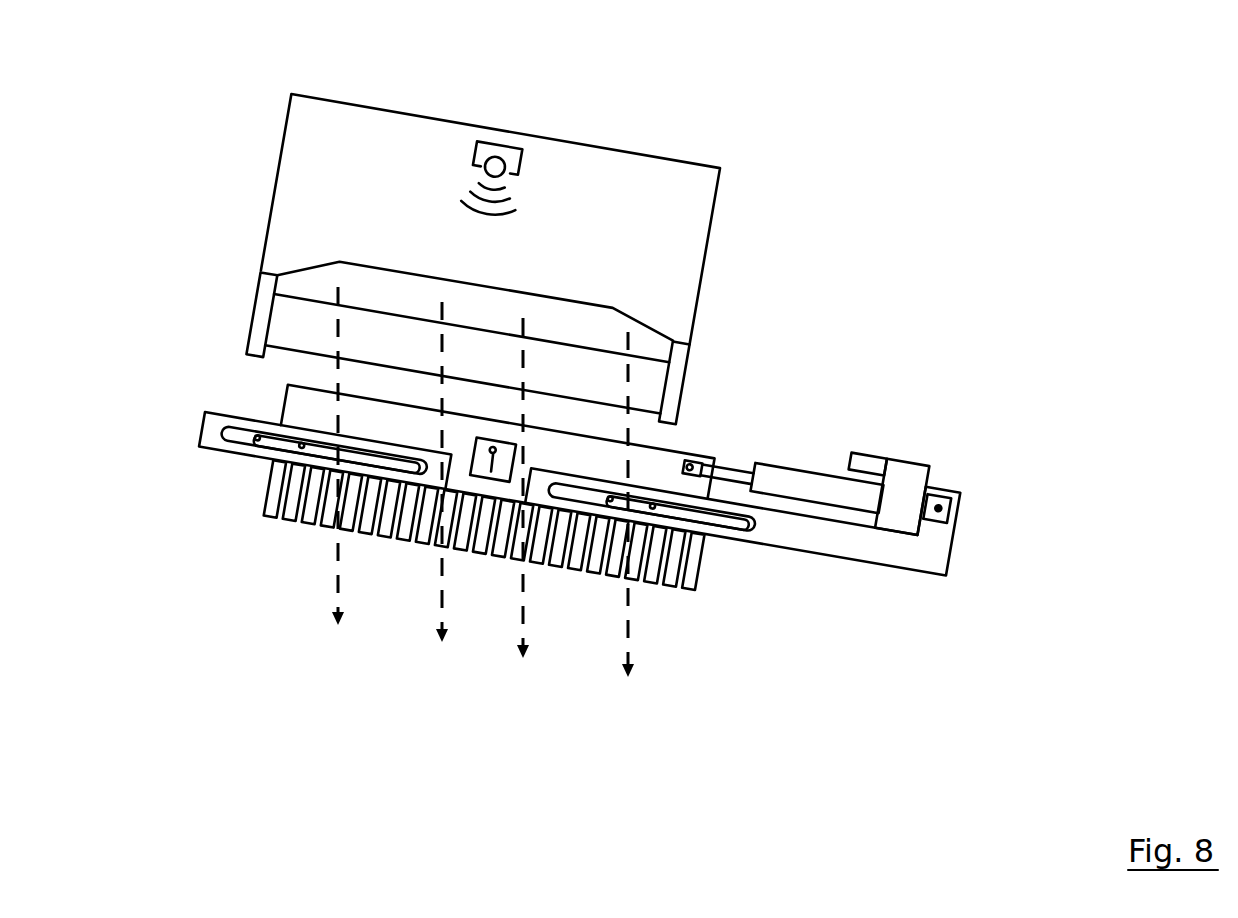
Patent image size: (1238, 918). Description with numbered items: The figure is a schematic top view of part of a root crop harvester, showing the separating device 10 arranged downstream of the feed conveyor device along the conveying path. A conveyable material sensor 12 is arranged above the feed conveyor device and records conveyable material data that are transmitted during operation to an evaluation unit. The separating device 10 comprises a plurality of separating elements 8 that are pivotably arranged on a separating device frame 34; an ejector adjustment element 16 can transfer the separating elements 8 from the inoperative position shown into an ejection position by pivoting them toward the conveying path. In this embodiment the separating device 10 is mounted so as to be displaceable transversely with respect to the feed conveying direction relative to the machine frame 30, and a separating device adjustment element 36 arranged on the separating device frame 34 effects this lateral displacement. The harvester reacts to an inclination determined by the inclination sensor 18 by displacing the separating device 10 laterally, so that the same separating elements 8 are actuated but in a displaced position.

The separating element 8 is at (278, 506).
The separating device 10 is at (579, 519).
The conveyable material sensor 12 is at (498, 157).
The ejector adjustment element 16 is at (575, 232).
The inclination sensor 18 is at (485, 483).
The machine frame 30 is at (875, 553).
The separating device frame 34 is at (312, 403).
The separating device adjustment element 36 is at (798, 470).